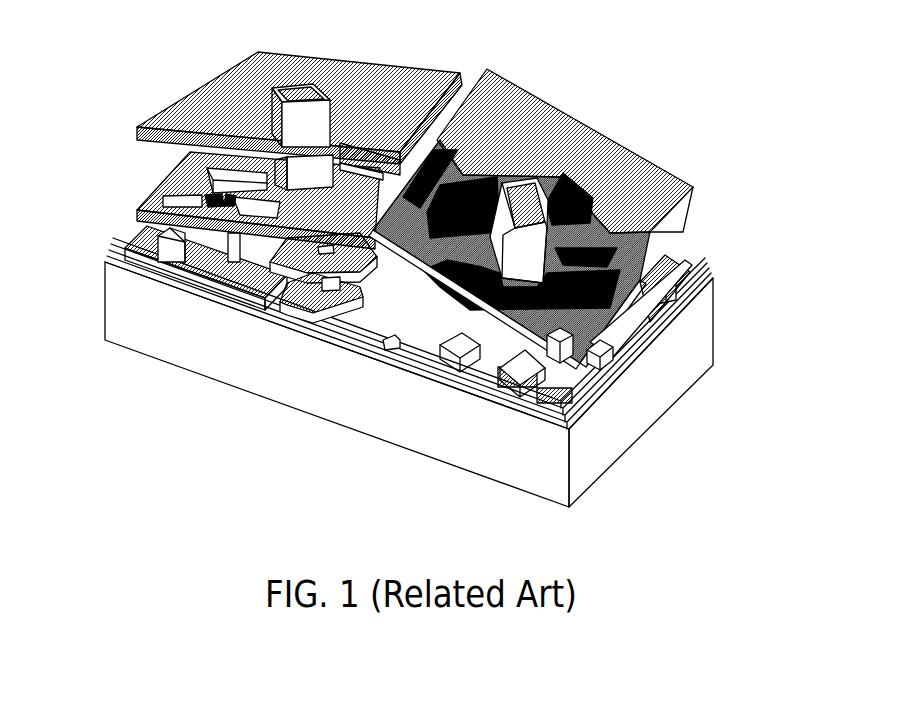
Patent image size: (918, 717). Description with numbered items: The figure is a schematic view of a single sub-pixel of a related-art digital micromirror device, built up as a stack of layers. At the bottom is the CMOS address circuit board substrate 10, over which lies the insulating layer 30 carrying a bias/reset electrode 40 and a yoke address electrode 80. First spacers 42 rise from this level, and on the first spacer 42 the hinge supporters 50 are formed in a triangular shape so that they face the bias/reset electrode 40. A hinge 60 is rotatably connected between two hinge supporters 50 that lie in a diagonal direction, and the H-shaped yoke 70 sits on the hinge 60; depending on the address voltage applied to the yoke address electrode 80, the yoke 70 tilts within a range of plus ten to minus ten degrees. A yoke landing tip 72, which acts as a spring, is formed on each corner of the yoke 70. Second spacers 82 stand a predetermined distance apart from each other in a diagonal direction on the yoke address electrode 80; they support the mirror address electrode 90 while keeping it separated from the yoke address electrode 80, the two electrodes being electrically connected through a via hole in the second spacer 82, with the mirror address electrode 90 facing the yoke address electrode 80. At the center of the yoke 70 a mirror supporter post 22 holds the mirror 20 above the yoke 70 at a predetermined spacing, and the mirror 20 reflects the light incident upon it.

The CMOS address circuit board substrate 10 is at (603, 433).
The mirror 20 is at (288, 77).
The mirror supporter post 22 is at (283, 163).
The insulating layer 30 is at (697, 278).
The bias/reset electrode 40 is at (182, 257).
The first spacer 42 is at (165, 237).
The hinge supporter 50 is at (215, 206).
The hinge 60 is at (240, 232).
The yoke 70 is at (462, 332).
The yoke landing tip 72 is at (493, 343).
The yoke address electrode 80 is at (593, 362).
The second spacer 82 is at (522, 328).
The mirror address electrode 90 is at (517, 347).